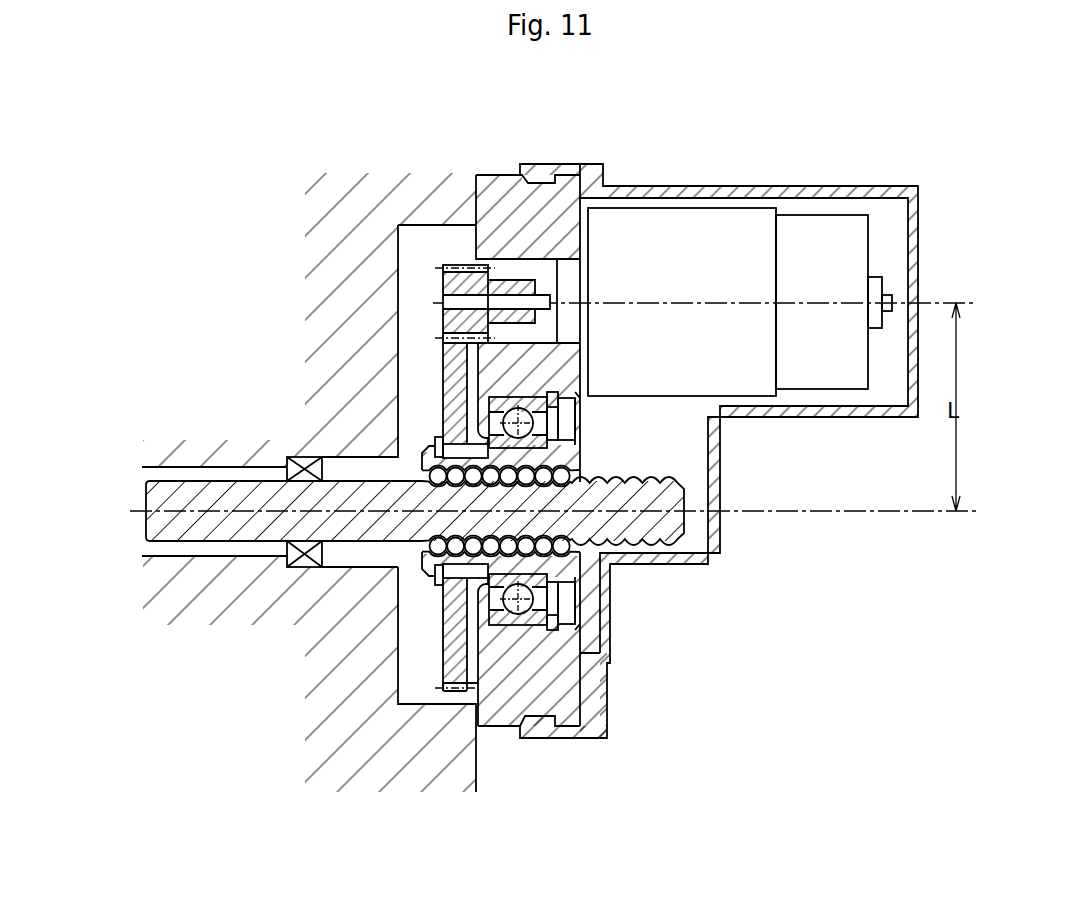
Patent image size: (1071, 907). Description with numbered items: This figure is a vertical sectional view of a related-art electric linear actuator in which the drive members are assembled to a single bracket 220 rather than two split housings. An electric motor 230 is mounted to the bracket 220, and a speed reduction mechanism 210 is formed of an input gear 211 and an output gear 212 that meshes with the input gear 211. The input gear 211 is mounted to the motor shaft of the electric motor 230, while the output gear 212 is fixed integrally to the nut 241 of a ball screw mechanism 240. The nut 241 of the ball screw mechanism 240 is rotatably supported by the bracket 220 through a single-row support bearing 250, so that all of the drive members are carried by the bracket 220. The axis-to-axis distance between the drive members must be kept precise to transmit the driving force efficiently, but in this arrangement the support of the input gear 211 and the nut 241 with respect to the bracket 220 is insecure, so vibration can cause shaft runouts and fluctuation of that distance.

The speed reduction mechanism 210 is at (363, 495).
The input gear 211 is at (455, 287).
The output gear 212 is at (455, 367).
The bracket 220 is at (505, 207).
The electric motor 230 is at (693, 230).
The ball screw mechanism 240 is at (589, 582).
The nut 241 is at (560, 452).
The single-row support bearing 250 is at (532, 618).